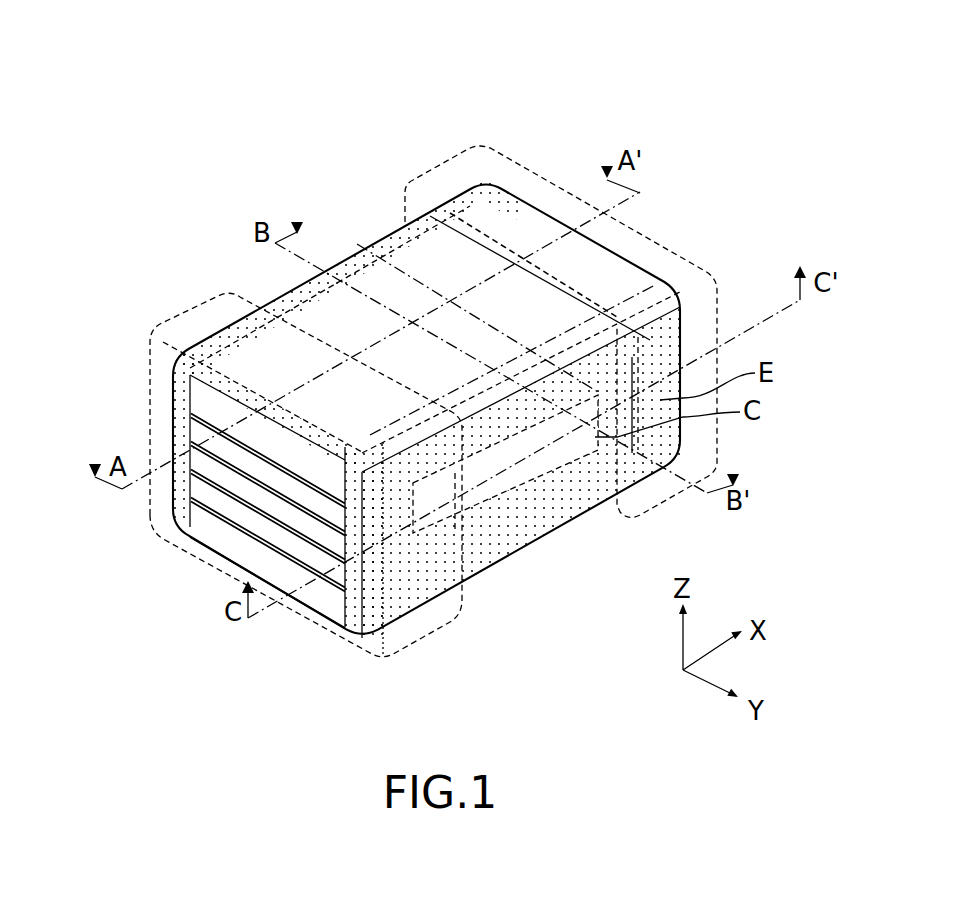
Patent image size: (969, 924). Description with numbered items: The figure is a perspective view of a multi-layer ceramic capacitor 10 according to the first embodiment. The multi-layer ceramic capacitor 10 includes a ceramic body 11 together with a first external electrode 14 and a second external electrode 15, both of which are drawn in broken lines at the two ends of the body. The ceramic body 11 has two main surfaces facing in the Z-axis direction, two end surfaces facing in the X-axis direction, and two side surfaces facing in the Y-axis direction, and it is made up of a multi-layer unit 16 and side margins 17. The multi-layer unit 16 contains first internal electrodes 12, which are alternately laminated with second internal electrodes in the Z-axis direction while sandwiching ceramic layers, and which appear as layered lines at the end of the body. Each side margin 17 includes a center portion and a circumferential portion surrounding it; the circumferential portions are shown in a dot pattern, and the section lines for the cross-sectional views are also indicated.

The multi-layer ceramic capacitor 10 is at (528, 112).
The ceramic body 11 is at (316, 133).
The first internal electrodes 12 is at (242, 530).
The first external electrode 14 is at (197, 310).
The second external electrode 15 is at (452, 172).
The multi-layer unit 16 is at (398, 268).
The side margins 17 is at (377, 424).